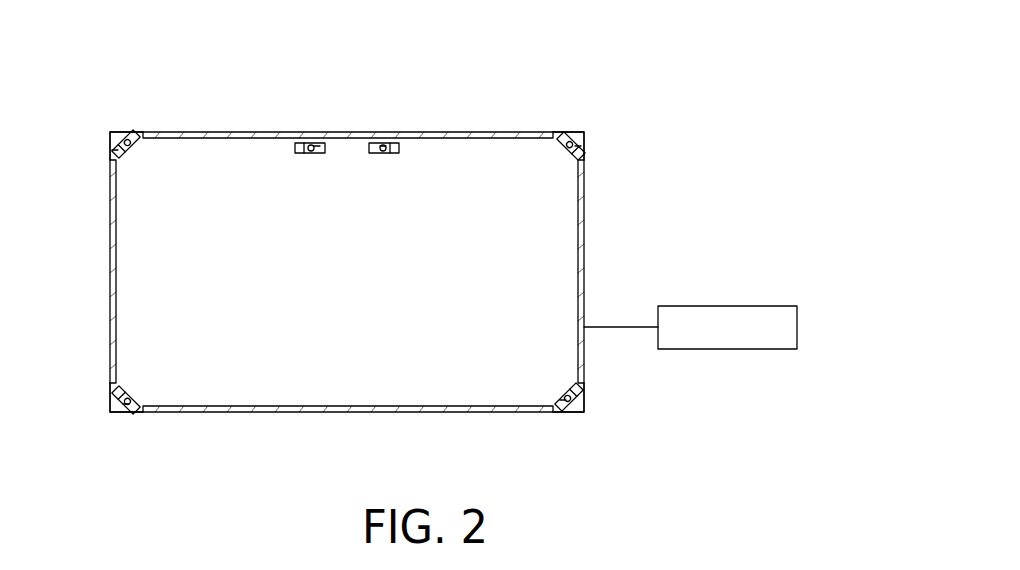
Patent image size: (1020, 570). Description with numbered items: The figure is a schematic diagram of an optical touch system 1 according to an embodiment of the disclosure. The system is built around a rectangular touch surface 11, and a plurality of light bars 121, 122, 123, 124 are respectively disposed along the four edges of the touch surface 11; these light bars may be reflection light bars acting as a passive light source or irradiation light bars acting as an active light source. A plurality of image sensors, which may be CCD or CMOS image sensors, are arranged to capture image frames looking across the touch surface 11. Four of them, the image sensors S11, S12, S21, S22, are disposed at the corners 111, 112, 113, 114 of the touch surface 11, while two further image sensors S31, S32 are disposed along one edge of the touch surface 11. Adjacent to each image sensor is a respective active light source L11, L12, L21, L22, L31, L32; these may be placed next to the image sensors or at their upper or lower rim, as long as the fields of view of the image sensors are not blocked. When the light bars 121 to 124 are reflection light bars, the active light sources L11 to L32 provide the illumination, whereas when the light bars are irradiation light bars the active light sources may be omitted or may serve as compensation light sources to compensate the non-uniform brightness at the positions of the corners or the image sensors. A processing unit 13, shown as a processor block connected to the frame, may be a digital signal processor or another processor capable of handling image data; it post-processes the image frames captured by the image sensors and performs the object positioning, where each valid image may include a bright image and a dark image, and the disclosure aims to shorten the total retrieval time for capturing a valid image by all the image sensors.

The optical touch system 1 is at (622, 79).
The touch surface 11 is at (432, 375).
The processing unit 13 is at (752, 306).
The corner 111 is at (113, 131).
The corner 112 is at (587, 133).
The corner 113 is at (588, 413).
The corner 114 is at (112, 413).
The light bar 121 is at (212, 136).
The light bar 122 is at (584, 221).
The light bar 123 is at (310, 406).
The light bar 124 is at (112, 270).
The image sensor S11 is at (133, 136).
The image sensor S12 is at (572, 138).
The image sensor S21 is at (113, 385).
The image sensor S22 is at (585, 386).
The image sensor S31 is at (302, 148).
The image sensor S32 is at (398, 150).
The active light source L11 is at (116, 153).
The active light source L12 is at (578, 146).
The active light source L21 is at (128, 410).
The active light source L22 is at (563, 413).
The active light source L31 is at (317, 148).
The active light source L32 is at (385, 148).